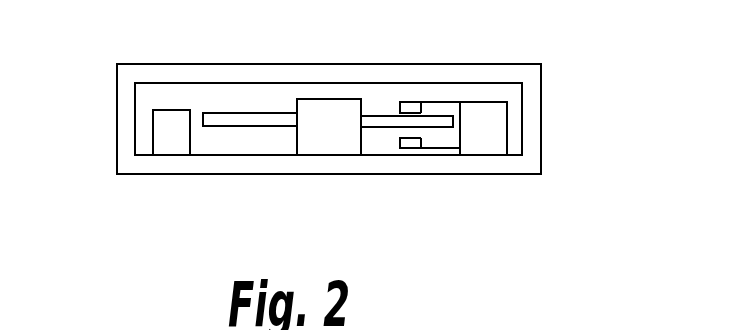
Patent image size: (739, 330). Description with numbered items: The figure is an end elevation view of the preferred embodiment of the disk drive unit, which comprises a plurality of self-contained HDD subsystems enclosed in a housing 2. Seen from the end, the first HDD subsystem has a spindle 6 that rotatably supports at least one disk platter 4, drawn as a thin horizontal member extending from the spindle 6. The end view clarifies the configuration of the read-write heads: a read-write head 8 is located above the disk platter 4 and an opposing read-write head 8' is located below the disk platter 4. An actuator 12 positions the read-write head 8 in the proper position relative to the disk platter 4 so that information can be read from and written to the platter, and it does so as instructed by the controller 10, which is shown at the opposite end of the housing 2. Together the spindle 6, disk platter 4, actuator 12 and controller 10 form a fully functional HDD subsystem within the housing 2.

The housing 2 is at (532, 65).
The disk platter 4 is at (215, 126).
The spindle 6 is at (332, 142).
The read-write head 8 is at (430, 68).
The read-write head 8' is at (430, 184).
The controller 10 is at (163, 138).
The actuator 12 is at (480, 147).